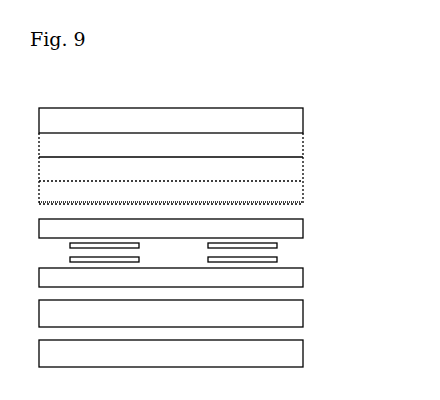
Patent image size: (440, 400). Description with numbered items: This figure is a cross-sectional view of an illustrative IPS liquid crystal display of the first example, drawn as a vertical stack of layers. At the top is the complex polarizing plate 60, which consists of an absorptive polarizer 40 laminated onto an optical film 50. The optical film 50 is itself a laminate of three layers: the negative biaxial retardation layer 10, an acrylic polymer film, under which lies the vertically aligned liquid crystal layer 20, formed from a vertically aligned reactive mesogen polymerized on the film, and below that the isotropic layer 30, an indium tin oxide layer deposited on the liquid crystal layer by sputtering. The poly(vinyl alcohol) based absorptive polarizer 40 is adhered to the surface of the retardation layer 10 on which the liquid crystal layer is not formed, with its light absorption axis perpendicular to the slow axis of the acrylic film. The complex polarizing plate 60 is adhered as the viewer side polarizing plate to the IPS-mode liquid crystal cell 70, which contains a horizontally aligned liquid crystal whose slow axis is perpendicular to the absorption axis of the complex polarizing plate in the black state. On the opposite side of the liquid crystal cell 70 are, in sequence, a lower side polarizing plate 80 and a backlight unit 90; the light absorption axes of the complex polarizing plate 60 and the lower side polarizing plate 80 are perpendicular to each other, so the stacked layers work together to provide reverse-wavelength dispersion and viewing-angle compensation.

The negative biaxial retardation layer 10 is at (303, 141).
The vertically aligned liquid crystal layer 20 is at (303, 200).
The isotropic layer 30 is at (303, 170).
The absorptive polarizer 40 is at (303, 112).
The optical film 50 is at (345, 130).
The complex polarizing plate 60 is at (391, 98).
The IPS-mode liquid crystal cell 70 is at (313, 219).
The lower side polarizing plate 80 is at (303, 314).
The backlight unit 90 is at (303, 355).